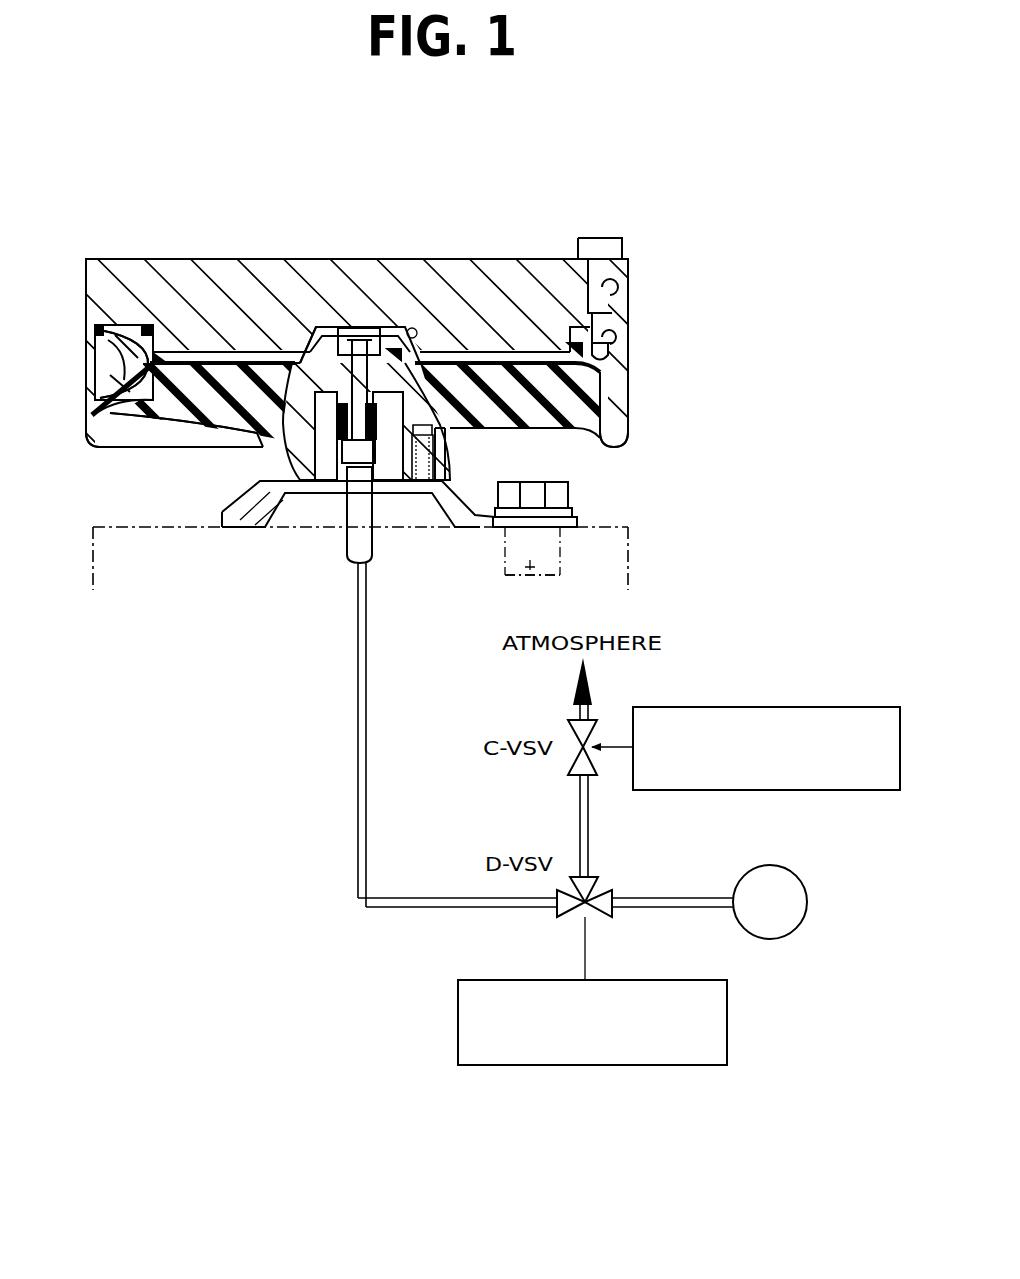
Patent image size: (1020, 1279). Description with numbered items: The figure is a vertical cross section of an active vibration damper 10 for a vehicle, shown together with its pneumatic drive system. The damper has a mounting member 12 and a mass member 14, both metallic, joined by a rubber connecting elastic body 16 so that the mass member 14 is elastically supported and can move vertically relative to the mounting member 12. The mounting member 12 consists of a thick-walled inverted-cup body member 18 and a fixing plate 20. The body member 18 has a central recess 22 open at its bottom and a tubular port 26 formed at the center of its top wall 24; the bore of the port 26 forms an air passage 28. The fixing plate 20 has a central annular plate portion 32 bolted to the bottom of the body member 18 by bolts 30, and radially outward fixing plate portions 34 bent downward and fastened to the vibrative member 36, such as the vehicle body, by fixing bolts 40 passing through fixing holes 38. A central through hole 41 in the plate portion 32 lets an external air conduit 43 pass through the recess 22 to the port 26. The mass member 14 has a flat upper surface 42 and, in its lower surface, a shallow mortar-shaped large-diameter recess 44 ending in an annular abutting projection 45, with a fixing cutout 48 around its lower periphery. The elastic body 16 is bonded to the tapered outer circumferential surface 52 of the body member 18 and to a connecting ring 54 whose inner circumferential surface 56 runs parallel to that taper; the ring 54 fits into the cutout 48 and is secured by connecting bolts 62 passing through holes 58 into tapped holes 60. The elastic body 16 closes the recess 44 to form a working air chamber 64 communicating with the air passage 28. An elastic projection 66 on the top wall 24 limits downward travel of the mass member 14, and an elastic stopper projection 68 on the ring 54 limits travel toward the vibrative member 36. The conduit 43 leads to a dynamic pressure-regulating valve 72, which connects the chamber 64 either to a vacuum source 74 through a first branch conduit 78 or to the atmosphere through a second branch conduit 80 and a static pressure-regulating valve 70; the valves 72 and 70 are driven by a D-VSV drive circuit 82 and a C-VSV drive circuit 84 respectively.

The active vibration damper 10 is at (578, 155).
The mounting member 12 is at (300, 400).
The mass member 14 is at (277, 272).
The connecting elastic body 16 is at (170, 410).
The body member 18 is at (450, 362).
The fixing plate 20 is at (243, 496).
The central recess 22 is at (320, 452).
The top wall 24 is at (338, 378).
The tubular port 26 is at (400, 420).
The air passage 28 is at (363, 367).
The bolts 30 is at (430, 503).
The central annular plate portion 32 is at (310, 497).
The fixing plate portion 34 is at (565, 520).
The vibrative member 36 is at (640, 565).
The fixing holes 38 is at (518, 522).
The fixing bolts 40 is at (527, 573).
The central through hole 41 is at (385, 495).
The upper surface 42 is at (492, 262).
The external air conduit 43 is at (368, 835).
The large-diameter recess 44 is at (413, 328).
The annular abutting projection 45 is at (100, 417).
The fixing cutout 48 is at (100, 343).
The tapered outer circumferential surface 52 is at (232, 370).
The connecting ring 54 is at (100, 385).
The inner circumferential surface 56 is at (590, 425).
The through holes 58 is at (612, 300).
The tapped holes 60 is at (612, 345).
The connecting bolts 62 is at (605, 245).
The working air chamber 64 is at (302, 337).
The elastic projection 66 is at (392, 353).
The elastic stopper projection 68 is at (97, 437).
The static pressure-regulating valve (C-VSV) 70 is at (597, 730).
The dynamic pressure-regulating valve (D-VSV) 72 is at (612, 882).
The vacuum source 74 is at (766, 937).
The first branch conduit 78 is at (685, 907).
The second branch conduit 80 is at (588, 808).
The D-VSV drive circuit 82 is at (460, 1065).
The C-VSV drive circuit 84 is at (640, 707).